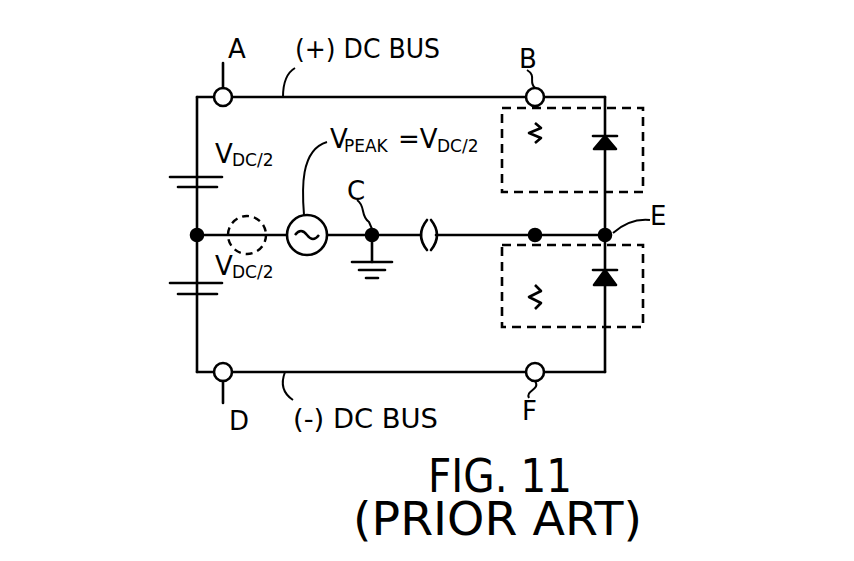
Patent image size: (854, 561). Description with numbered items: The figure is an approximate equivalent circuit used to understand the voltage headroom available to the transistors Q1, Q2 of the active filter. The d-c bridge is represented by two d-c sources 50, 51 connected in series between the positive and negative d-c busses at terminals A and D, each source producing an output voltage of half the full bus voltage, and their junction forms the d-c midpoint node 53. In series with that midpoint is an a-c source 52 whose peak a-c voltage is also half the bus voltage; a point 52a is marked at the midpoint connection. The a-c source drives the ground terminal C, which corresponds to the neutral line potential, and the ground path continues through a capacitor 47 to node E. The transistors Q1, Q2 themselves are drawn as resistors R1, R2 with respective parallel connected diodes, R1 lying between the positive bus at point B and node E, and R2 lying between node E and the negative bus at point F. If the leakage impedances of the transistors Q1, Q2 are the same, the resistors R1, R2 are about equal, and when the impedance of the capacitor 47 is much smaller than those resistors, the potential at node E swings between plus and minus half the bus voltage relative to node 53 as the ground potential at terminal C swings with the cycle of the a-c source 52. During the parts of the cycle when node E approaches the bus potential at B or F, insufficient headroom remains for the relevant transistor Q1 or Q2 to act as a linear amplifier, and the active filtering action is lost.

The capacitor 47 is at (425, 222).
The d-c source 50 is at (178, 183).
The d-c source 51 is at (178, 290).
The a-c source 52 is at (307, 255).
The neutral connection point 52a is at (245, 216).
The d-c midpoint node 53 is at (192, 237).
The resistor R1 is at (539, 140).
The resistor R2 is at (552, 288).
The transistor Q1 is at (643, 148).
The transistor Q2 is at (643, 288).